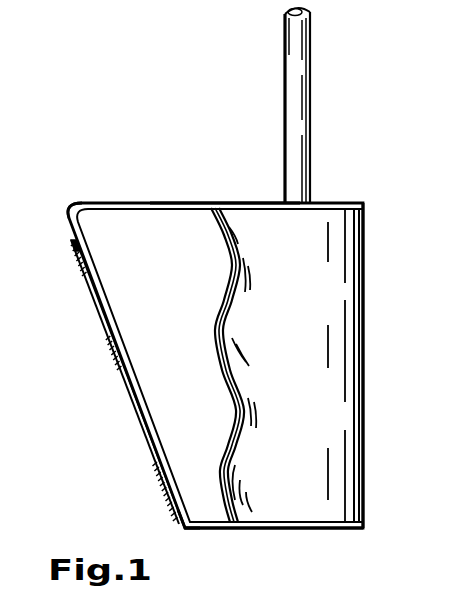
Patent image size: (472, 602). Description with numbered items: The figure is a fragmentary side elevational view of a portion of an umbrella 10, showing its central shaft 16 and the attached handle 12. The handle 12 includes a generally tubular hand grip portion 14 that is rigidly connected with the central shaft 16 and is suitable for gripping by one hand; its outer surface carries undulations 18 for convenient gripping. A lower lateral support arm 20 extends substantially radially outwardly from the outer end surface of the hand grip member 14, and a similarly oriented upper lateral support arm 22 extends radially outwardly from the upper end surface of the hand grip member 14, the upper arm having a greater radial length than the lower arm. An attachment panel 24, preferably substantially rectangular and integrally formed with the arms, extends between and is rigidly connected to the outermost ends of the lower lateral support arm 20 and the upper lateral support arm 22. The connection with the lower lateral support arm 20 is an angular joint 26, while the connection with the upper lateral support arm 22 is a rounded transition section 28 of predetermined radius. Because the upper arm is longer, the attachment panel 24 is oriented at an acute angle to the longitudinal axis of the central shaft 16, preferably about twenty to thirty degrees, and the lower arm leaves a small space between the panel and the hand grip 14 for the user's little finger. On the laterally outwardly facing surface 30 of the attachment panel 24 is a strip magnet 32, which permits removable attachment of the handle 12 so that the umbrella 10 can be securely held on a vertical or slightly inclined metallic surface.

The umbrella 10 is at (116, 100).
The handle 12 is at (396, 194).
The hand grip portion 14 is at (338, 449).
The central shaft 16 is at (312, 117).
The undulations 18 is at (230, 259).
The lower lateral support arm 20 is at (232, 528).
The upper lateral support arm 22 is at (157, 203).
The attachment panel 24 is at (152, 441).
The angular joint 26 is at (183, 532).
The rounded transition section 28 is at (70, 212).
The laterally outwardly facing surface 30 is at (157, 463).
The strip magnet 32 is at (108, 351).